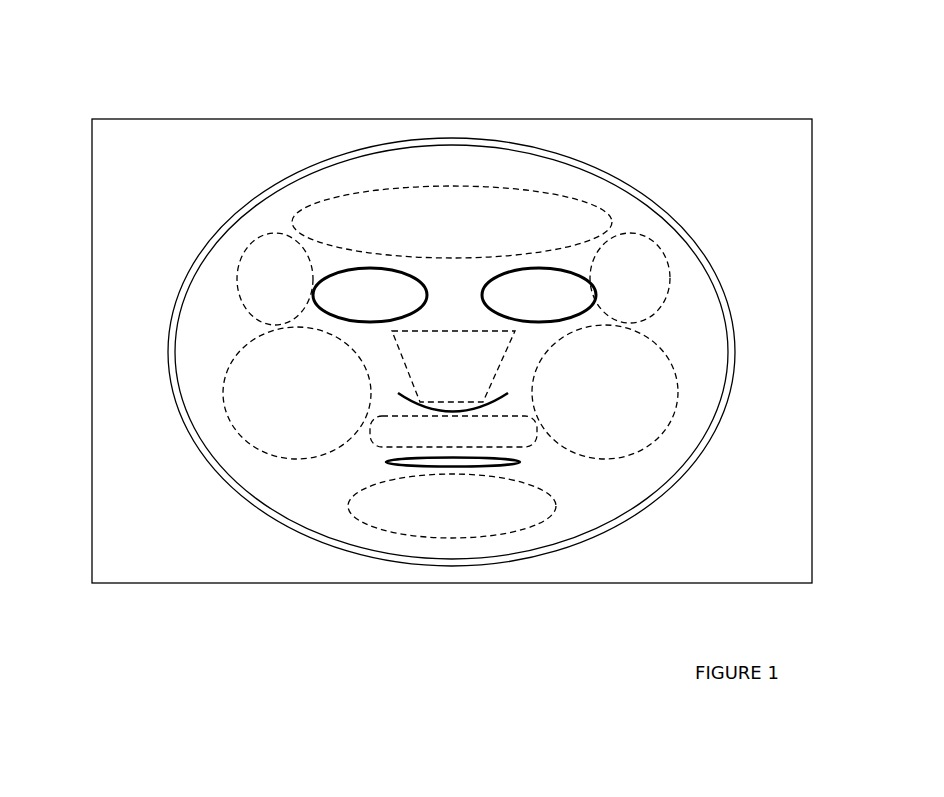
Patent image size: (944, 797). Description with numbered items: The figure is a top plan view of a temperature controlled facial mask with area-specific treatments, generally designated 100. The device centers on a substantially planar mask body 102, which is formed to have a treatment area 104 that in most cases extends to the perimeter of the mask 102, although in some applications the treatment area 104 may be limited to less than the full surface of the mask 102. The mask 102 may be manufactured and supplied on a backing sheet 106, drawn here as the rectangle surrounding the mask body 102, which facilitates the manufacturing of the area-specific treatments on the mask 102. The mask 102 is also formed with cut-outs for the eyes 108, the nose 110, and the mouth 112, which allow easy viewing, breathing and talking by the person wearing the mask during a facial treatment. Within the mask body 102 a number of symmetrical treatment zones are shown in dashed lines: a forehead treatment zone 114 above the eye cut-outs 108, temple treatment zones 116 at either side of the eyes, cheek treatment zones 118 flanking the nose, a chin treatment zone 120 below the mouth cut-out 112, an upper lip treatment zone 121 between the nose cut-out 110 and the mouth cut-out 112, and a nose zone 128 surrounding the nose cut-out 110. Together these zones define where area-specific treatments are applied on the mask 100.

The temperature controlled facial mask with area-specific treatments 100 is at (169, 89).
The mask body 102 is at (332, 148).
The treatment area 104 is at (422, 147).
The backing sheet 106 is at (256, 145).
The cut-outs for eyes 108 is at (559, 265).
The cut-out for nose 110 is at (397, 395).
The cut-out for mouth 112 is at (387, 461).
The forehead treatment zone 114 is at (555, 217).
The temple treatment zones 116 is at (240, 281).
The cheek treatment zones 118 is at (648, 413).
The chin treatment zone 120 is at (472, 517).
The upper lip treatment zone 121 is at (525, 433).
The nose zone 128 is at (422, 362).